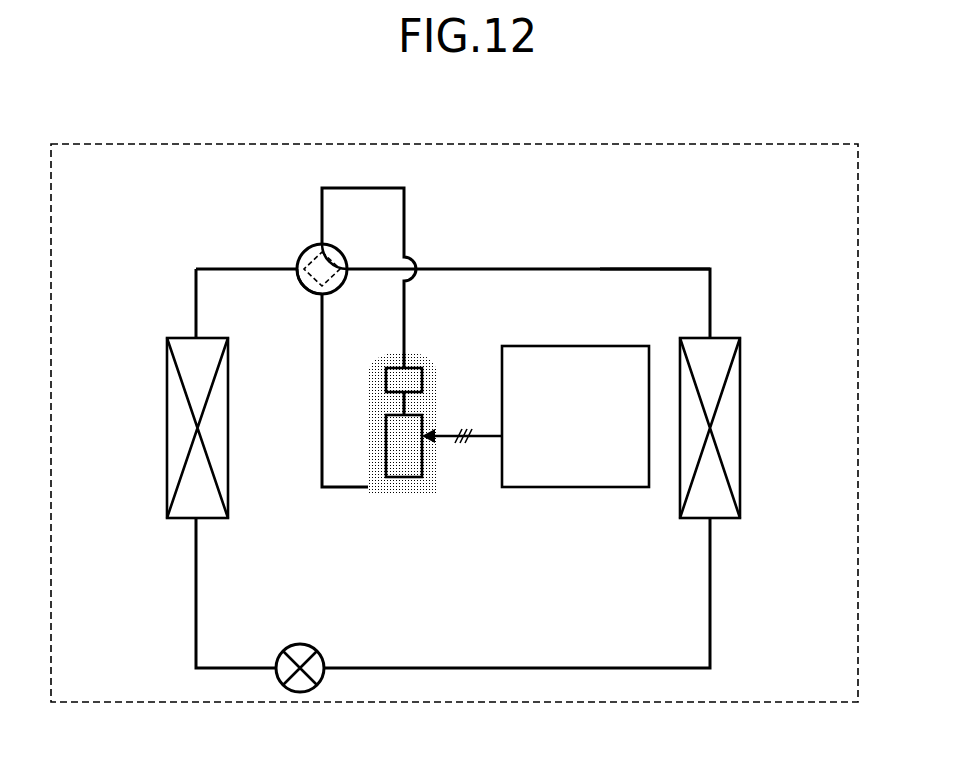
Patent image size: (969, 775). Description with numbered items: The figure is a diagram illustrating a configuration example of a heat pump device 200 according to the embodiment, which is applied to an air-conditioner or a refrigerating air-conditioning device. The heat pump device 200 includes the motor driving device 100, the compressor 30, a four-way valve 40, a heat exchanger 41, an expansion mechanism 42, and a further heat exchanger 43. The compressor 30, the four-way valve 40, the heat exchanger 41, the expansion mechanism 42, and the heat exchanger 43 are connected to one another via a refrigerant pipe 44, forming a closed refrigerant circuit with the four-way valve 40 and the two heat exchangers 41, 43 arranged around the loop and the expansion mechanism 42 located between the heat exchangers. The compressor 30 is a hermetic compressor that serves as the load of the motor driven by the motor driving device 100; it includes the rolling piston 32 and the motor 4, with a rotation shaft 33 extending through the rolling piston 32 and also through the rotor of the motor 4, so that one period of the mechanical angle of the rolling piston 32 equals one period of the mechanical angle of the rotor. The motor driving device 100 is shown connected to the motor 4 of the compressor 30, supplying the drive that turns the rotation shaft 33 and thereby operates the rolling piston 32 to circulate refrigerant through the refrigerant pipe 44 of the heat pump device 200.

The heat pump device 200 is at (822, 144).
The compressor 30 is at (410, 352).
The rolling piston 32 is at (386, 383).
The rotation shaft 33 is at (402, 407).
The motor 4 is at (422, 458).
The motor driving device 100 is at (598, 346).
The four-way valve 40 is at (297, 258).
The heat exchanger 41 is at (183, 338).
The expansion mechanism 42 is at (280, 682).
The heat exchanger 43 is at (729, 338).
The refrigerant pipe 44 is at (675, 270).